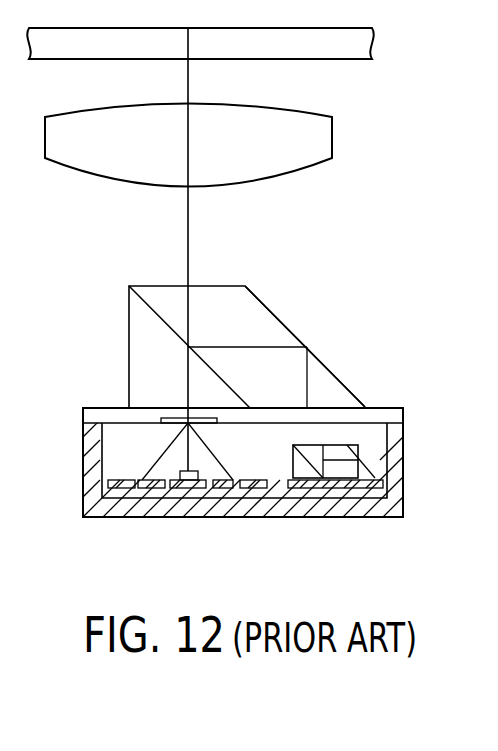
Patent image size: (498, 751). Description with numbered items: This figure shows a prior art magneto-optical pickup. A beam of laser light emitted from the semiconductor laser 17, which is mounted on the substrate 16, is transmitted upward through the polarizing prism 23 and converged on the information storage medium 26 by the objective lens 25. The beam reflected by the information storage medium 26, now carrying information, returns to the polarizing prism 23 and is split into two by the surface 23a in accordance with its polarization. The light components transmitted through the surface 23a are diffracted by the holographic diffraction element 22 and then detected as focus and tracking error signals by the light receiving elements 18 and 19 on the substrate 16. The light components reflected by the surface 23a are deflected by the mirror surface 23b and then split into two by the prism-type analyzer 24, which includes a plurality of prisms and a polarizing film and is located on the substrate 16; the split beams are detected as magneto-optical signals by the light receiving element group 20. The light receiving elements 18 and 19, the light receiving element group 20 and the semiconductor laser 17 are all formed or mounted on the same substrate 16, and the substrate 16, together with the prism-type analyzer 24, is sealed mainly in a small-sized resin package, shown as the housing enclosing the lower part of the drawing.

The substrate 16 is at (105, 502).
The semiconductor laser 17 is at (188, 488).
The light receiving element 18 is at (152, 488).
The light receiving element 19 is at (235, 488).
The light receiving element group 20 is at (333, 488).
The holographic diffraction element 22 is at (170, 425).
The polarizing prism 23 is at (228, 285).
The surface 23a is at (160, 317).
The mirror surface 23b is at (320, 360).
The prism-type analyzer 24 is at (347, 445).
The objective lens 25 is at (52, 158).
The information storage medium 26 is at (350, 59).